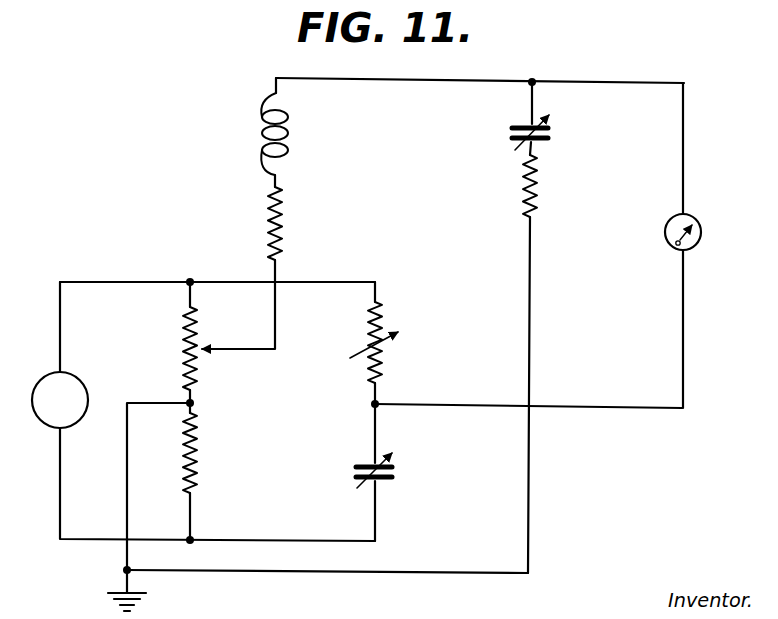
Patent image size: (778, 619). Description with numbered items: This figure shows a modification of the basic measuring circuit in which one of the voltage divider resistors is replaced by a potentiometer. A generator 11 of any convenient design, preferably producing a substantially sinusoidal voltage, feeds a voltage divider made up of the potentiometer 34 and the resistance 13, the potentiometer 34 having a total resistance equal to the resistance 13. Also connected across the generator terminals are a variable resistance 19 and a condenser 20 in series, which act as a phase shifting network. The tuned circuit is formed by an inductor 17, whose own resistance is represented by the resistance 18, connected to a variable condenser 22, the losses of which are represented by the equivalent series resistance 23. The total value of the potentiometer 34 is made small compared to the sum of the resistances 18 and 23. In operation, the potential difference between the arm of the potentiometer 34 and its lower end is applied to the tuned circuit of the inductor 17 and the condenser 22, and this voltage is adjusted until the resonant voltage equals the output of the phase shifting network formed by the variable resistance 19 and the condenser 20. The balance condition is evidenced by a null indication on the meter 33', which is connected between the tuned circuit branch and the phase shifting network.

The generator 11 is at (82, 386).
The resistance 13 is at (195, 470).
The inductor 17 is at (262, 121).
The resistance 18 is at (282, 232).
The variable resistance 19 is at (378, 352).
The condenser 20 is at (392, 476).
The variable condenser 22 is at (548, 143).
The equivalent series resistance 23 is at (536, 196).
The meter 33' is at (705, 232).
The potentiometer 34 is at (188, 348).